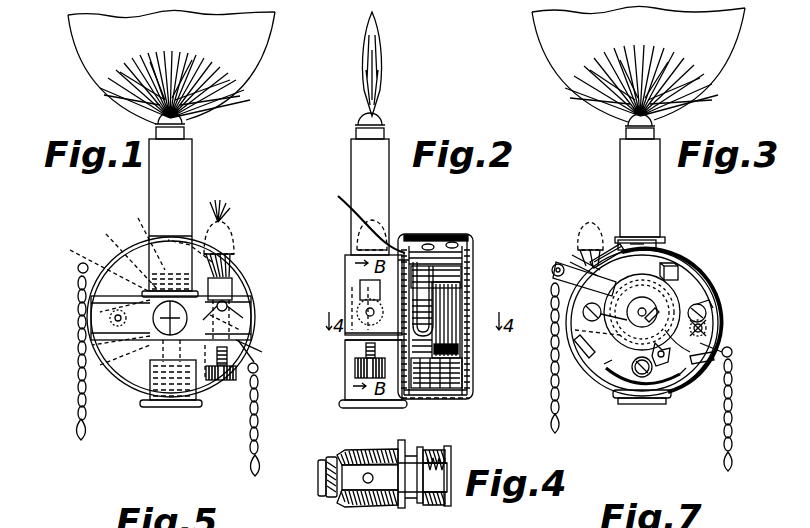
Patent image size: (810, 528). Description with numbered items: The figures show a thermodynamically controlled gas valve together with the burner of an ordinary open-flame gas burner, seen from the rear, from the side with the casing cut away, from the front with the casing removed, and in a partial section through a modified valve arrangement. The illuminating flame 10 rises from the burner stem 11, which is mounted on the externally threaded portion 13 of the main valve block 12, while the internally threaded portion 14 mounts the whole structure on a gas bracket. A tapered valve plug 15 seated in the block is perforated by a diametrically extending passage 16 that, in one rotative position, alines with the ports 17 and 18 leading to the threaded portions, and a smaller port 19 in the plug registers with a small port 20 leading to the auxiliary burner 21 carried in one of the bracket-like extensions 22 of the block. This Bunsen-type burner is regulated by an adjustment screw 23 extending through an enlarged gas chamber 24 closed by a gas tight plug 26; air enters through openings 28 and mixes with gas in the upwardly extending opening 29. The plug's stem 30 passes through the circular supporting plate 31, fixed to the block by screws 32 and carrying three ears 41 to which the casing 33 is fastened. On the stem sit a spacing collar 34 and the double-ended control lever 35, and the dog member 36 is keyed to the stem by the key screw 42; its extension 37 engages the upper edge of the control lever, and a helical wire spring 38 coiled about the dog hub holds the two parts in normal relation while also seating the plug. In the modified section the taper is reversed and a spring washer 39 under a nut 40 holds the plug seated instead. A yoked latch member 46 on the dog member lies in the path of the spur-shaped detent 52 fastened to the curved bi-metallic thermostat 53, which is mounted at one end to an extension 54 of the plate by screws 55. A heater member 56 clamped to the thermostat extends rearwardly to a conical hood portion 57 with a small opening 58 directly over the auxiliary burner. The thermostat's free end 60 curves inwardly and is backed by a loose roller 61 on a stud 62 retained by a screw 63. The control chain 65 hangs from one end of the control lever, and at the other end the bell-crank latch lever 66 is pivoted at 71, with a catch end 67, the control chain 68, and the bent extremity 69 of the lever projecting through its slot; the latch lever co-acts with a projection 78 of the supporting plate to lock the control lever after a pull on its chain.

In FIG. 1, the illuminating flame 10 is at (257, 49).
In FIG. 2, the illuminating flame 10 is at (377, 47).
In FIG. 3, the illuminating flame 10 is at (548, 30).
In FIG. 1, the burner stem 11 is at (192, 153).
In FIG. 2, the burner stem 11 is at (351, 149).
In FIG. 3, the burner stem 11 is at (621, 149).
In FIG. 1, the main valve block 12 is at (154, 362).
In FIG. 2, the main valve block 12 is at (348, 390).
In FIG. 4, the main valve block 12 is at (346, 492).
In FIG. 3, the main valve block 12 is at (624, 404).
In FIG. 1, the externally threaded portion 13 is at (114, 254).
In FIG. 1, the internally threaded portion 14 is at (165, 408).
In FIG. 3, the internally threaded portion 14 is at (524, 292).
In FIG. 1, the tapered valve plug 15 is at (95, 336).
In FIG. 2, the tapered valve plug 15 is at (350, 270).
In FIG. 4, the tapered valve plug 15 is at (342, 480).
In FIG. 1, the diametrically extending passage 16 is at (82, 304).
In FIG. 4, the diametrically extending passage 16 is at (365, 482).
In FIG. 1, the port 17 is at (92, 265).
In FIG. 1, the port 18 is at (82, 380).
In FIG. 1, the smaller port 19 is at (206, 385).
In FIG. 1, the small port 20 is at (134, 235).
In FIG. 1, the auxiliary burner 21 is at (234, 281).
In FIG. 2, the auxiliary burner 21 is at (358, 284).
In FIG. 1, the bracket-like extensions 22 is at (249, 303).
In FIG. 1, the adjustment screw 23 is at (229, 382).
In FIG. 2, the adjustment screw 23 is at (355, 372).
In FIG. 1, the enlarged gas chamber 24 is at (244, 322).
In FIG. 2, the gas tight plug 26 is at (366, 321).
In FIG. 1, the openings 28 is at (230, 268).
In FIG. 2, the openings 28 is at (358, 304).
In FIG. 1, the upwardly extending opening 29 is at (240, 258).
In FIG. 2, the stem 30 is at (466, 302).
In FIG. 4, the stem 30 is at (447, 484).
In FIG. 3, the stem 30 is at (657, 306).
In FIG. 1, the circular supporting plate 31 is at (126, 374).
In FIG. 2, the circular supporting plate 31 is at (405, 240).
In FIG. 4, the circular supporting plate 31 is at (399, 455).
In FIG. 3, the circular supporting plate 31 is at (702, 278).
In FIG. 1, the screws 32 is at (112, 320).
In FIG. 3, the screws 32 is at (688, 308).
In FIG. 1, the casing 33 is at (256, 346).
In FIG. 2, the casing 33 is at (473, 248).
In FIG. 4, the spacing collar 34 is at (402, 447).
In FIG. 1, the control lever 35 is at (258, 368).
In FIG. 2, the control lever 35 is at (446, 238).
In FIG. 4, the control lever 35 is at (420, 452).
In FIG. 3, the control lever 35 is at (564, 257).
In FIG. 2, the dog member 36 is at (462, 318).
In FIG. 4, the dog member 36 is at (446, 466).
In FIG. 3, the dog member 36 is at (617, 380).
In FIG. 2, the extension 37 is at (466, 264).
In FIG. 3, the extension 37 is at (666, 258).
In FIG. 2, the helical wire spring 38 is at (456, 332).
In FIG. 3, the helical wire spring 38 is at (572, 362).
In FIG. 4, the spring washer 39 is at (327, 478).
In FIG. 4, the nut 40 is at (322, 460).
In FIG. 2, the ears 41 is at (417, 246).
In FIG. 3, the ears 41 is at (655, 245).
In FIG. 4, the key screw 42 is at (449, 464).
In FIG. 3, the key screw 42 is at (660, 312).
In FIG. 2, the yoked latch member 46 is at (462, 370).
In FIG. 3, the yoked latch member 46 is at (652, 378).
In FIG. 3, the spur-shaped detent 52 is at (707, 330).
In FIG. 2, the bi-metallic thermostat 53 is at (462, 348).
In FIG. 3, the bi-metallic thermostat 53 is at (696, 262).
In FIG. 2, the extension 54 is at (440, 292).
In FIG. 3, the extension 54 is at (600, 242).
In FIG. 2, the screws 55 is at (468, 238).
In FIG. 3, the screws 55 is at (584, 223).
In FIG. 2, the heater member 56 is at (362, 216).
In FIG. 3, the heater member 56 is at (624, 250).
In FIG. 1, the hood portion 57 is at (225, 252).
In FIG. 2, the hood portion 57 is at (360, 236).
In FIG. 3, the hood portion 57 is at (588, 236).
In FIG. 1, the small opening 58 is at (236, 222).
In FIG. 2, the small opening 58 is at (359, 215).
In FIG. 3, the free end 60 is at (614, 386).
In FIG. 2, the loose roller 61 is at (466, 386).
In FIG. 3, the loose roller 61 is at (636, 385).
In FIG. 2, the stud 62 is at (364, 349).
In FIG. 3, the retaining screw 63 is at (648, 385).
In FIG. 1, the control chain 65 is at (250, 466).
In FIG. 3, the control chain 65 is at (586, 306).
In FIG. 1, the latch lever 66 is at (78, 268).
In FIG. 3, the latch lever 66 is at (732, 348).
In FIG. 3, the catch end 67 is at (706, 312).
In FIG. 1, the control chain 68 is at (76, 411).
In FIG. 3, the control chain 68 is at (733, 408).
In FIG. 3, the bent extremity 69 is at (733, 355).
In FIG. 3, the pivot 71 is at (708, 368).
In FIG. 3, the projection 78 is at (716, 268).